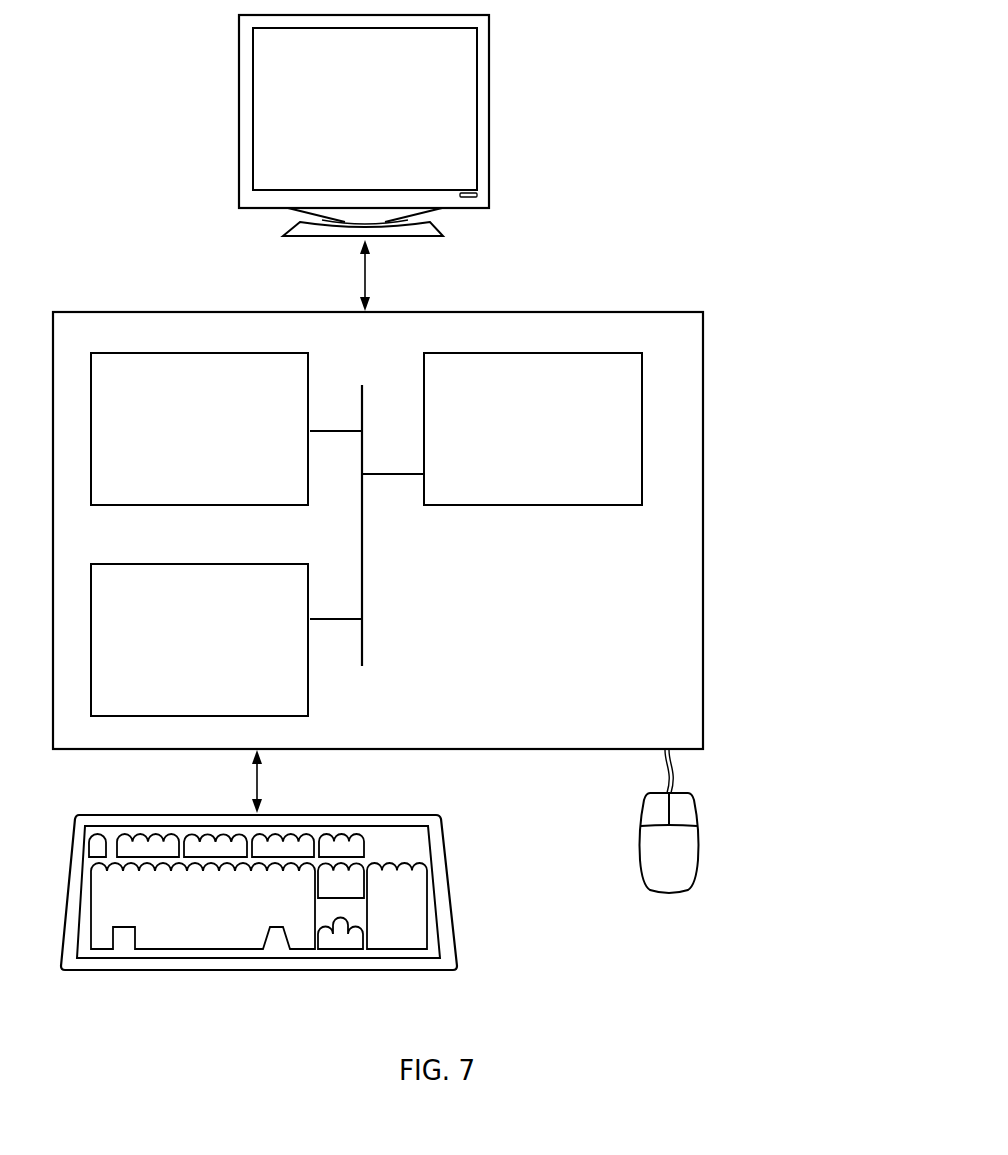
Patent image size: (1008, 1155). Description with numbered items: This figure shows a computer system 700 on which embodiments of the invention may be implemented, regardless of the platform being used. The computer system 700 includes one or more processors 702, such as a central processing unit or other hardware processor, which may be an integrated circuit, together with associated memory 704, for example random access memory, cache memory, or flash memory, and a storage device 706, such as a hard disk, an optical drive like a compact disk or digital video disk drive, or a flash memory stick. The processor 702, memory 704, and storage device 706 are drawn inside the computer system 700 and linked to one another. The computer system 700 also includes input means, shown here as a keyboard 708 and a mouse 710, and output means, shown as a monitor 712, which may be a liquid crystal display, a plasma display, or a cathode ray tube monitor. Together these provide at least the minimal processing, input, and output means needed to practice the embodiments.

The computer system 700 is at (760, 316).
The processor 702 is at (512, 426).
The memory 704 is at (177, 430).
The storage device 706 is at (177, 638).
The keyboard 708 is at (177, 902).
The mouse 710 is at (705, 901).
The monitor 712 is at (340, 120).